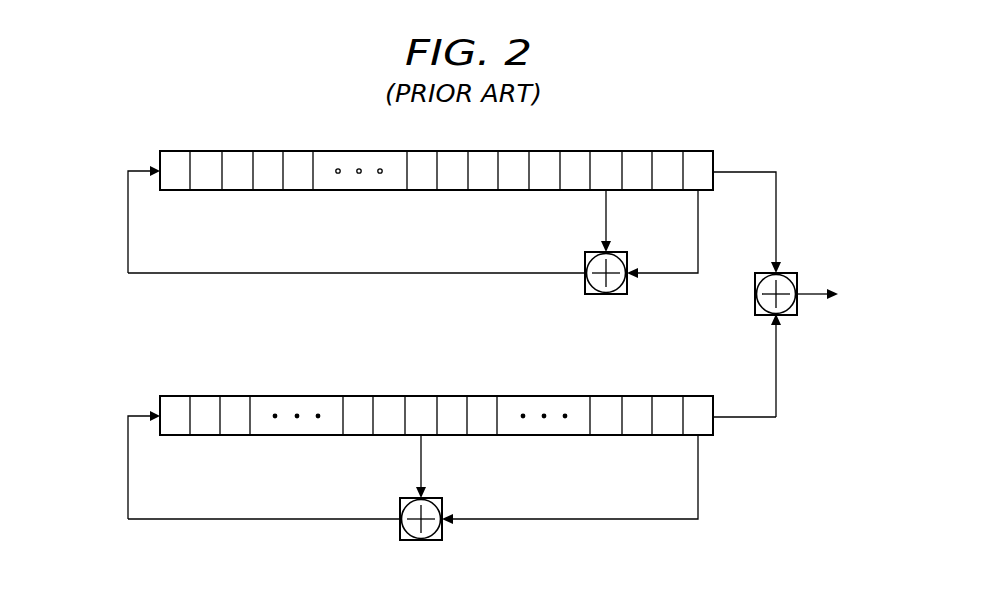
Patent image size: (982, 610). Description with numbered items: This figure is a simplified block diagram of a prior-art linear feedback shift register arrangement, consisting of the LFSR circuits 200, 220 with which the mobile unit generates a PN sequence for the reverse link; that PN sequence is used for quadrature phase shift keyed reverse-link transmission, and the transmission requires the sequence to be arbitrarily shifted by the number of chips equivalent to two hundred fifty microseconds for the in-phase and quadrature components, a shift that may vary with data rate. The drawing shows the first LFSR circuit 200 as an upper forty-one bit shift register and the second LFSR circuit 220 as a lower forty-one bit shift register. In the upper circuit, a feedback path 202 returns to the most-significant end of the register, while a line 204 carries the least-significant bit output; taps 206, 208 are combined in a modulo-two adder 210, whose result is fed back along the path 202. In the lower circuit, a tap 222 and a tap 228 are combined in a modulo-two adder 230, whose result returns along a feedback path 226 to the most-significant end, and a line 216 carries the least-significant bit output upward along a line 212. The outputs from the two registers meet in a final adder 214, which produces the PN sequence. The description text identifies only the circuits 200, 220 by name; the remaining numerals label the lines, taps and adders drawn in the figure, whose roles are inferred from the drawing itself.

The LFSR circuit 200 is at (280, 137).
The feedback path to MSB of shift register 1 202 is at (126, 221).
The output line from LSB of shift register 1 204 is at (742, 171).
The tap from bit 3 of shift register 1 206 is at (608, 215).
The tap from bit 0 of shift register 1 208 is at (667, 275).
The modulo-2 adder (XOR) of shift register 1 210 is at (608, 295).
The output line from LSB of shift register 2 to output adder 212 is at (795, 316).
The output modulo-2 adder producing PN sequence 214 is at (810, 292).
The output line from LSB of shift register 2 216 is at (743, 418).
The LFSR circuit 220 is at (280, 381).
The tap from bit 20 of shift register 2 222 is at (418, 462).
The feedback path to MSB of shift register 2 226 is at (126, 466).
The tap from bit 0 of shift register 2 228 is at (568, 521).
The modulo-2 adder (XOR) of shift register 2 230 is at (423, 541).